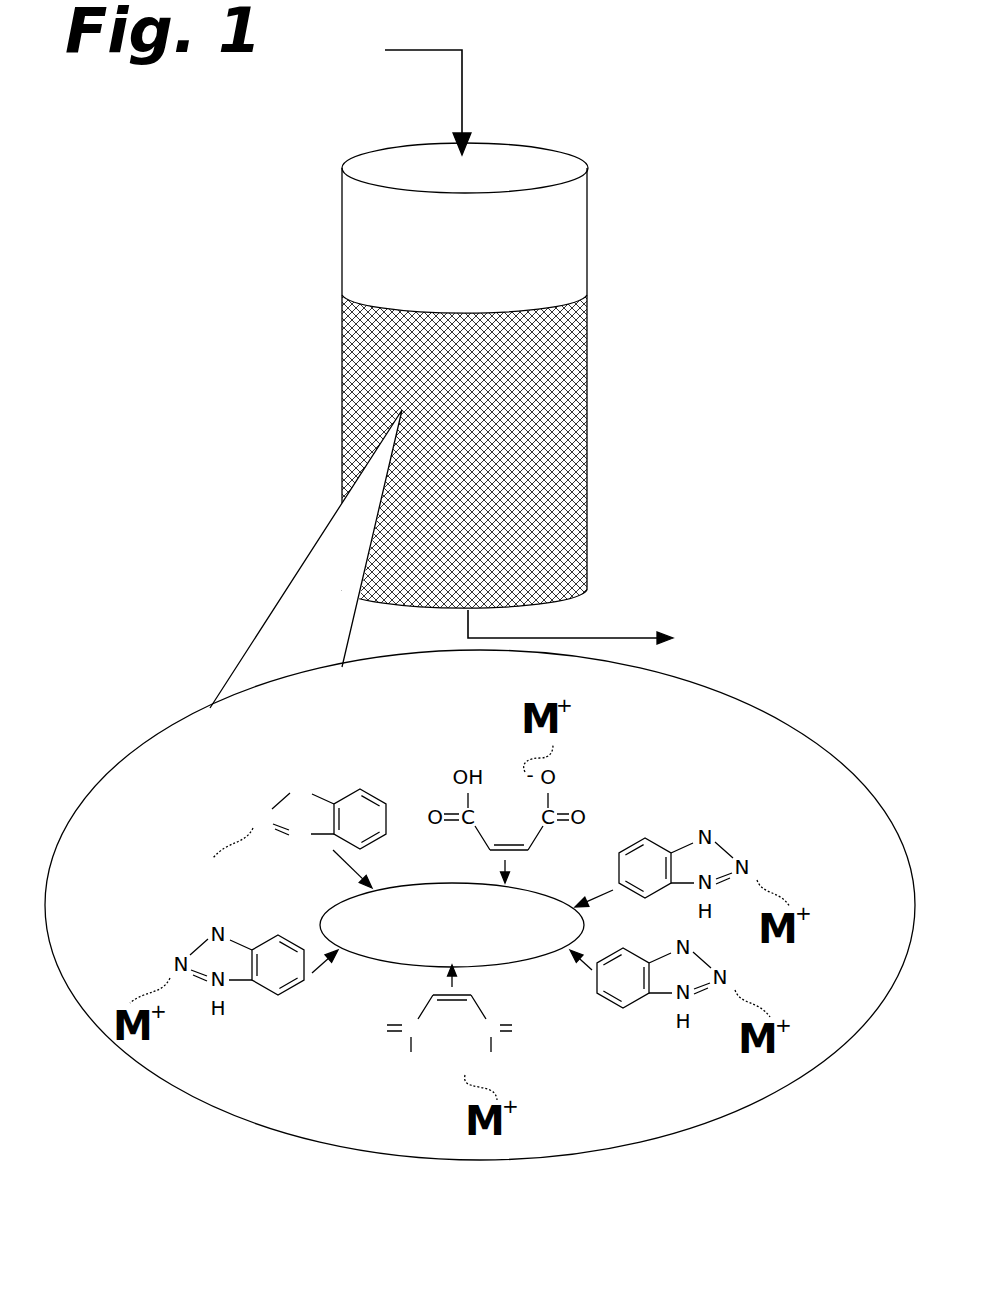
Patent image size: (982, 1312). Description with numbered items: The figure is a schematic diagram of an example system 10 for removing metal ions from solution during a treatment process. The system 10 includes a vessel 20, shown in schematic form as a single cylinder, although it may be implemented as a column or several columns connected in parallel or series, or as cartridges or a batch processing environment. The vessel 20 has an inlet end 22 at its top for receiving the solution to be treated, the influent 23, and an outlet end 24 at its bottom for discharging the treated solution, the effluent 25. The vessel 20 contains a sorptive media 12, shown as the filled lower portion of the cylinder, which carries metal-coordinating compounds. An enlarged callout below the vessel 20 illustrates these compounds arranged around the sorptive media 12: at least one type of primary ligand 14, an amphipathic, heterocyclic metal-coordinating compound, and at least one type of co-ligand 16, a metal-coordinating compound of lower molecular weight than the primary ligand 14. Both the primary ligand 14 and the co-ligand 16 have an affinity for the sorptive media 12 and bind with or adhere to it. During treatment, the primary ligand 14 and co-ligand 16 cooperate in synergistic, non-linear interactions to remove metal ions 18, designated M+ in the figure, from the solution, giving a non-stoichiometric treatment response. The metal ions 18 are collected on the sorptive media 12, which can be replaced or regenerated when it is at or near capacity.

The system 10 is at (639, 113).
The sorptive media 12 is at (562, 434).
The primary ligand 14 is at (363, 766).
The co-ligand 16 is at (372, 1056).
The metal ions 18 is at (193, 840).
The vessel 20 is at (368, 152).
The inlet end 22 is at (477, 180).
The influent 23 is at (418, 50).
The outlet end 24 is at (478, 604).
The effluent 25 is at (608, 638).